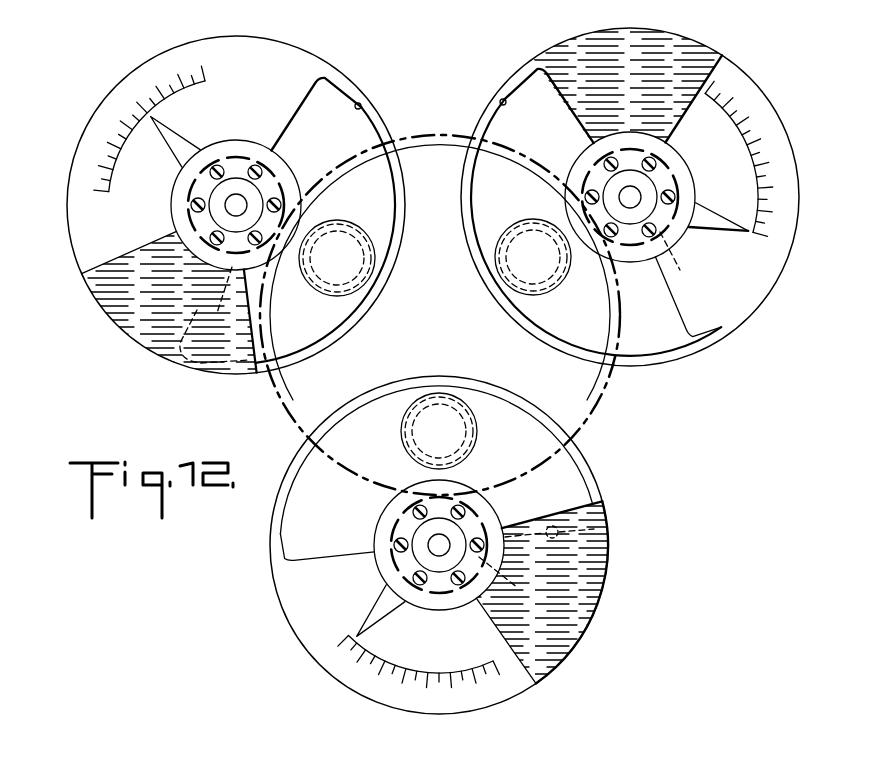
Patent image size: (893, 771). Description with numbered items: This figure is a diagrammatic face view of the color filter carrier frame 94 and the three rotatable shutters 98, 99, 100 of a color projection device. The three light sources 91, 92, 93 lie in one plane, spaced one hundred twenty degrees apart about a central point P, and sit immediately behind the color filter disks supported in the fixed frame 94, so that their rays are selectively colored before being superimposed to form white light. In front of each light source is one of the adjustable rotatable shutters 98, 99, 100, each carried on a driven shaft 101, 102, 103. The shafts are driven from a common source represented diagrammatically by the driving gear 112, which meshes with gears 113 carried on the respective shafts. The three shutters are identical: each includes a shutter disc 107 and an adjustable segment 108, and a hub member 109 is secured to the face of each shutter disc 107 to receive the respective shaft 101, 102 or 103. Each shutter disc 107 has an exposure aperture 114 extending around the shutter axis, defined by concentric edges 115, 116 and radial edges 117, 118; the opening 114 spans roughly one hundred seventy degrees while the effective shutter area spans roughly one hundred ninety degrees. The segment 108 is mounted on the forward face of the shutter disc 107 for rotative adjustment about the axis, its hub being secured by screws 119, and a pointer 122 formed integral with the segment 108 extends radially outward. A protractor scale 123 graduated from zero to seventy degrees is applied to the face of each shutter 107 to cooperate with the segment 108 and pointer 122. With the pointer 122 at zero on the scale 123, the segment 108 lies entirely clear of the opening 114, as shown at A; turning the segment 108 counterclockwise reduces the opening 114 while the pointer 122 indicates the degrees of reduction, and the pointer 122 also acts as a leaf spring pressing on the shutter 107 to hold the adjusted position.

The light source 91 is at (320, 283).
The light source 92 is at (472, 430).
The light source 93 is at (552, 276).
The color filter carrier frame 94 is at (440, 272).
The rotatable shutter 98 is at (590, 567).
The rotatable shutter 99 is at (120, 308).
The rotatable shutter 100 is at (716, 328).
The driven shaft 101 is at (248, 203).
The driven shaft 102 is at (440, 543).
The driven shaft 103 is at (637, 197).
The shutter disc 107 is at (97, 232).
The adjustable segment 108 is at (153, 337).
The hub member 109 is at (455, 562).
The driving gear 112 is at (597, 405).
The gear 113 is at (464, 420).
The exposure aperture 114 is at (336, 98).
The concentric edge 115 is at (361, 105).
The concentric edge 116 is at (261, 190).
The radial edge 117 is at (297, 110).
The radial edge 118 is at (196, 313).
The screw 119 is at (214, 242).
The pointer 122 is at (172, 149).
The protractor scale 123 is at (107, 137).
The central point P is at (456, 333).
The position A is at (658, 86).